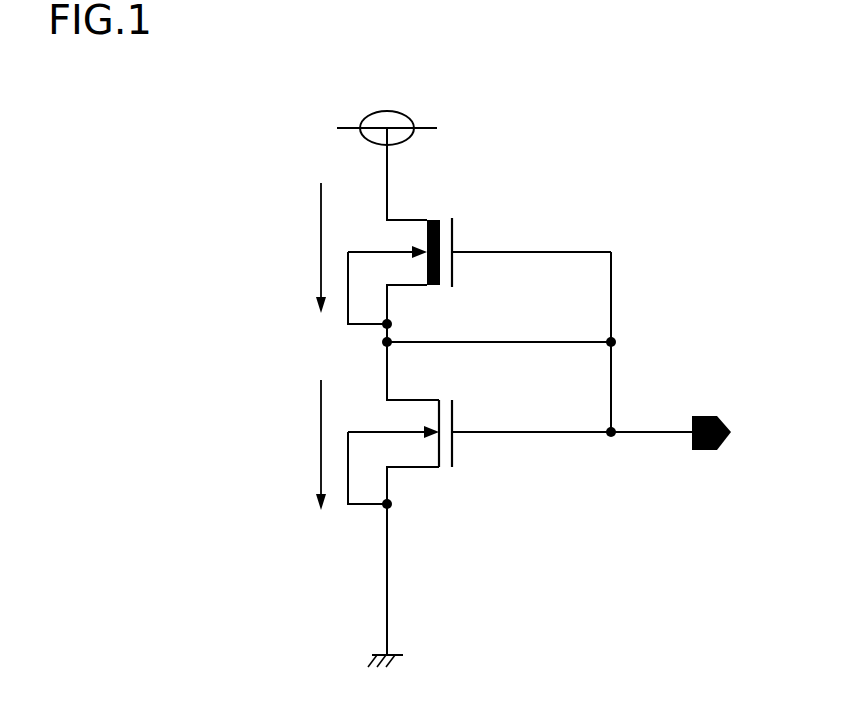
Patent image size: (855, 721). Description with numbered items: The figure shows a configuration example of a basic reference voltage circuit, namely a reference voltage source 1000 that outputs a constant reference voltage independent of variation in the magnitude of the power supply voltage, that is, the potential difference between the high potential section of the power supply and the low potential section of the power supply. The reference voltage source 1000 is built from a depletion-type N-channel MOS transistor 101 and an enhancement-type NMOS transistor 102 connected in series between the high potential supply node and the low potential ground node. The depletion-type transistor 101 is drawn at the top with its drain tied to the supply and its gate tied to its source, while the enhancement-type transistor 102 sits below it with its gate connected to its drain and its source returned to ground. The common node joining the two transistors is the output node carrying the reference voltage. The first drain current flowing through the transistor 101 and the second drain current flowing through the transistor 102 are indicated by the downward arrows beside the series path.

The reference voltage source 1000 is at (267, 102).
The depletion-type NMOS transistor 101 is at (453, 226).
The enhancement-type NMOS transistor 102 is at (455, 413).